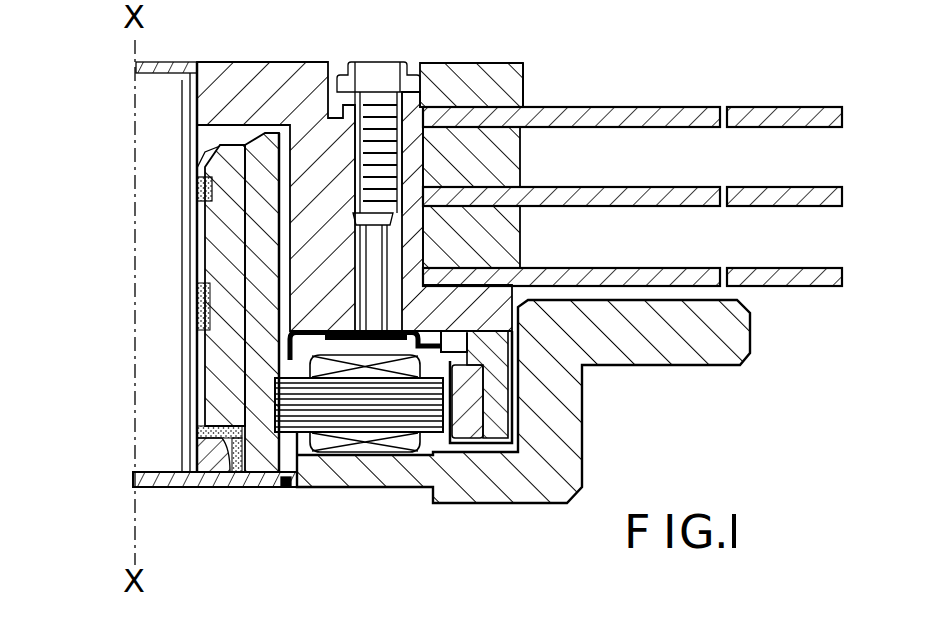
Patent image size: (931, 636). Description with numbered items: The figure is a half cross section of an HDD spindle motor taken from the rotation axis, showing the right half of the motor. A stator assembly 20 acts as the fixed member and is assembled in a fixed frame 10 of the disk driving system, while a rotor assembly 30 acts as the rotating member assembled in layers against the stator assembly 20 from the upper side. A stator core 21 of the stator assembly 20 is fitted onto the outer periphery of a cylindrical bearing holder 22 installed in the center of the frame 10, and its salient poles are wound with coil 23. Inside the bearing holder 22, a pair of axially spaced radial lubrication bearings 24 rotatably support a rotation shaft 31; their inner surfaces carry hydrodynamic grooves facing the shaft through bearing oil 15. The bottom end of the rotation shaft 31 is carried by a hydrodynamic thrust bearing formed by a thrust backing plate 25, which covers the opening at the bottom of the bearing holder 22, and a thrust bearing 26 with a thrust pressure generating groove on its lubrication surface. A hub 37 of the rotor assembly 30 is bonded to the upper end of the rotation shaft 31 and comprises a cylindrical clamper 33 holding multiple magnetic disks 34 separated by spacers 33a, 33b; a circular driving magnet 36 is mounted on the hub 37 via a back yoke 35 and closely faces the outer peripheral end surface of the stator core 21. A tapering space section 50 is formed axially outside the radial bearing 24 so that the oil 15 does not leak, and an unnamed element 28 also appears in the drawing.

The fixed frame 10 is at (505, 488).
The bearing oil 15 is at (205, 188).
The stator assembly 20 is at (433, 448).
The stator core 21 is at (303, 483).
The bearing holder 22 is at (258, 329).
The coil 23 is at (362, 455).
The radial lubrication bearings 24 is at (232, 247).
The thrust backing plate 25 is at (167, 488).
The thrust bearing 26 is at (155, 470).
The spacer ring 28 is at (243, 478).
The rotor assembly 30 is at (532, 97).
The rotation shaft 31 is at (163, 432).
The cylindrical clamper 33 is at (463, 72).
The spacer 33a is at (505, 150).
The spacer 33b is at (497, 235).
The magnetic disks 34 is at (698, 108).
The back yoke 35 is at (497, 427).
The motor rotor driving magnet 36 is at (462, 398).
The hub 37 is at (248, 80).
The tapering space section 50 is at (200, 147).